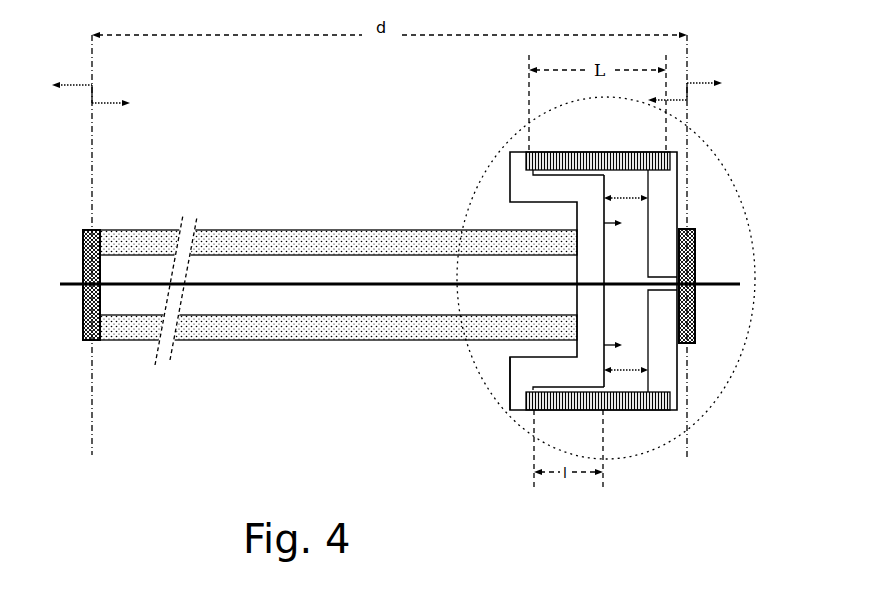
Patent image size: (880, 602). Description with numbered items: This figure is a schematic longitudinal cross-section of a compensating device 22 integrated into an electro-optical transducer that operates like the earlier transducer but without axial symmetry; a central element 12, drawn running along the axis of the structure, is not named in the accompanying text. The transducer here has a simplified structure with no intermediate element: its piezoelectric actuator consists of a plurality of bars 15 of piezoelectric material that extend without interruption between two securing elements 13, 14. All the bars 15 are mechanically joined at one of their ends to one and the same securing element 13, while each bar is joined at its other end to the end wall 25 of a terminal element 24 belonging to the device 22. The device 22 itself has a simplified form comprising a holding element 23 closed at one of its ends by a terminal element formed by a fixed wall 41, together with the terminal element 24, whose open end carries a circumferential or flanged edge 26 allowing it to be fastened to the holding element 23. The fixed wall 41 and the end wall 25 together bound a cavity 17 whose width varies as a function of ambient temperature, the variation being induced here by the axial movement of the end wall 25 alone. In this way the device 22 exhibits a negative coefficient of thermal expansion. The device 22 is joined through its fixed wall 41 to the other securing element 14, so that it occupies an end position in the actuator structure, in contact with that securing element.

The optical fiber 12 is at (400, 223).
The securing element 13 is at (52, 321).
The securing element 14 is at (726, 321).
The bars 15 is at (338, 299).
The cavity 17 is at (626, 284).
The device 22 is at (526, 281).
The holding element 23 is at (598, 449).
The terminal element 24 is at (564, 135).
The end wall 25 is at (551, 281).
The circumferential edge 26 is at (465, 413).
The fixed wall 41 is at (700, 278).